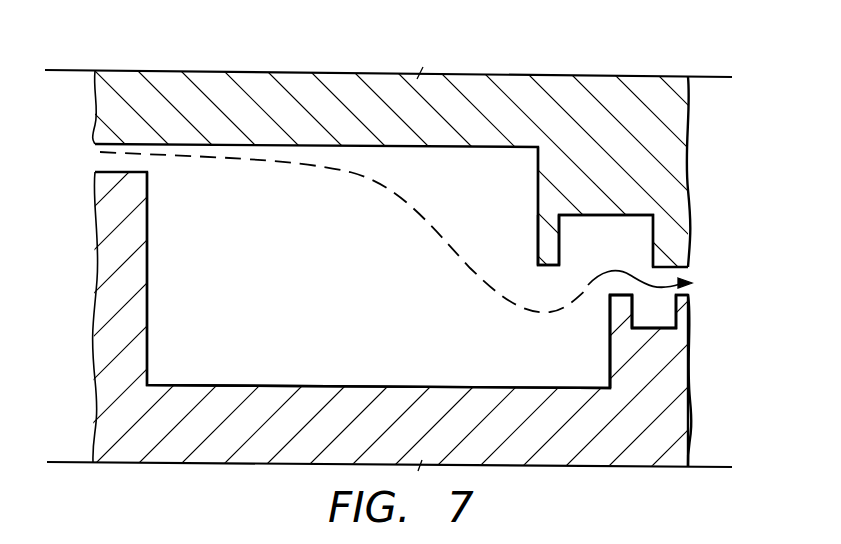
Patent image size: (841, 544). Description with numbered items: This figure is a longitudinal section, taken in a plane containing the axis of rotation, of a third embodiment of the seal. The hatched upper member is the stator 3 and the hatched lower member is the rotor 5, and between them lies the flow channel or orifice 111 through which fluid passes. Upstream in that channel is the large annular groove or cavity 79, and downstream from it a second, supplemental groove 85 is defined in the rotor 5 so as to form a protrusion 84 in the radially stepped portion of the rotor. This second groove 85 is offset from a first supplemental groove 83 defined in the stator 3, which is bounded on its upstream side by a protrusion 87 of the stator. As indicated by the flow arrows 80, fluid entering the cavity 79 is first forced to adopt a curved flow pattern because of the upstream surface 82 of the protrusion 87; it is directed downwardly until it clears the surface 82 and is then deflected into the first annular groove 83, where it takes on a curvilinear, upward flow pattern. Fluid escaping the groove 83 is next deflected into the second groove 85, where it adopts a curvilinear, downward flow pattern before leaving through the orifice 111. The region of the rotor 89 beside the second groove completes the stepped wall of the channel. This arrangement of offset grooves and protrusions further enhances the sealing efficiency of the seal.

The stator 3 is at (117, 80).
The rotor 5 is at (125, 455).
The annular groove 79 is at (305, 294).
The flow arrows 80 is at (230, 160).
The upstream surface 82 is at (537, 163).
The first supplemental groove 83 is at (594, 251).
The protrusion 84 is at (618, 304).
The second supplemental groove 85 is at (642, 324).
The protrusion 87 is at (545, 249).
The wall portion 89 is at (637, 382).
The flow channel or orifice 111 is at (684, 284).